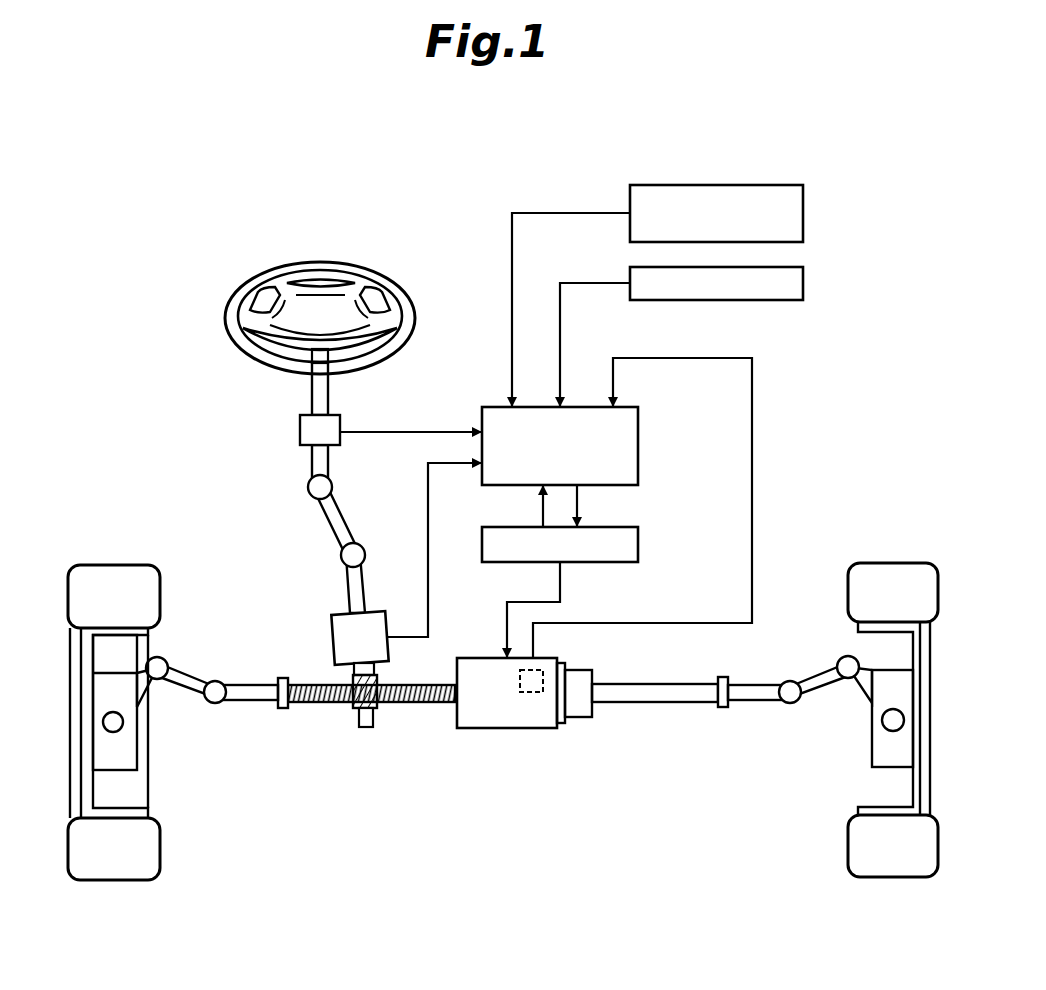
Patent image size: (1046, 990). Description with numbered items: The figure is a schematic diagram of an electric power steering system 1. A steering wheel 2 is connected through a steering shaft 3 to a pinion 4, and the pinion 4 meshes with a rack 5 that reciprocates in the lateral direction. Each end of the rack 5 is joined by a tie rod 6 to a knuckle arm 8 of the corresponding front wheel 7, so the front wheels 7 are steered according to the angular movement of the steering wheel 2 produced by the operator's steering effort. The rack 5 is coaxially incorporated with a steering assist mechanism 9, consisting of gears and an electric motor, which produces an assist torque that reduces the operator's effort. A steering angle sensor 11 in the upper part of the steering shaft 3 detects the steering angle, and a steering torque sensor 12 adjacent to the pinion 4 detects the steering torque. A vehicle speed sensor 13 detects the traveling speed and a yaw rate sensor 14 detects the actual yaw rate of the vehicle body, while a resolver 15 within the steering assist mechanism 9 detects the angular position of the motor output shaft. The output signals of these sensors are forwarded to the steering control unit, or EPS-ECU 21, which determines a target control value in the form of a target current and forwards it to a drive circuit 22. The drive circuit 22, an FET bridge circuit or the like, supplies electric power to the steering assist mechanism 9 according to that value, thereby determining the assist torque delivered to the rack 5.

The electric power steering system 1 is at (186, 244).
The steering wheel 2 is at (226, 322).
The steering shaft 3 is at (310, 396).
The pinion 4 is at (356, 712).
The rack 5 is at (405, 705).
The tie rod 6 is at (180, 692).
The front wheel 7 is at (120, 565).
The knuckle arm 8 is at (143, 668).
The steering assist mechanism 9 is at (470, 656).
The steering angle sensor 11 is at (297, 440).
The steering torque sensor 12 is at (332, 642).
The vehicle speed sensor 13 is at (805, 192).
The yaw rate sensor 14 is at (805, 275).
The resolver 15 is at (534, 693).
The steering control unit (EPS-ECU) 21 is at (640, 432).
The drive circuit 22 is at (640, 545).